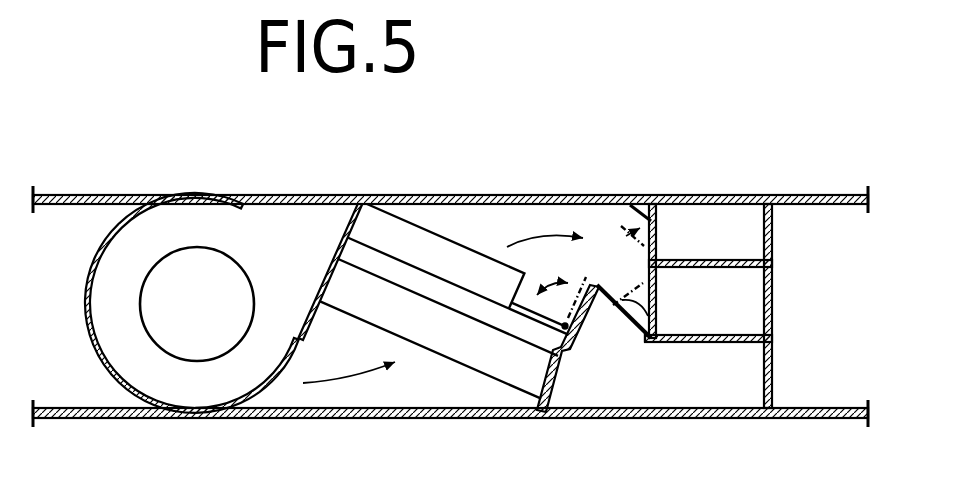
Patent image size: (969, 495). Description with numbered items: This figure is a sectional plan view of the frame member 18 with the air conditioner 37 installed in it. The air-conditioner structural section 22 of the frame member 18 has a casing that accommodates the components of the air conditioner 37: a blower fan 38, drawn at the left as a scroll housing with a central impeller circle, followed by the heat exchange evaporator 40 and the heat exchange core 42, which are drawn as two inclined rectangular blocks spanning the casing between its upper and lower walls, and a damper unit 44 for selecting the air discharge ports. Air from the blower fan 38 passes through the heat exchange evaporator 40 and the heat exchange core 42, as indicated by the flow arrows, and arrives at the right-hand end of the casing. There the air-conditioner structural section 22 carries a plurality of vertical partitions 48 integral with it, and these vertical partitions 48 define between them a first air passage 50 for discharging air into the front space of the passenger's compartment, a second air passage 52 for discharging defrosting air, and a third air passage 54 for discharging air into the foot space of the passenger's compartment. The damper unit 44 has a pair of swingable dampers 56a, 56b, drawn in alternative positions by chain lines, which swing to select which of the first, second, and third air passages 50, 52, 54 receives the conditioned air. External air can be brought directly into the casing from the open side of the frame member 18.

The frame member 18 is at (741, 117).
The air-conditioner structural section 22 is at (521, 196).
The air conditioner 37 is at (430, 387).
The blower fan 38 is at (158, 322).
The heat exchange evaporator 40 is at (507, 372).
The heat exchange core 42 is at (412, 240).
The damper unit 44 is at (668, 229).
The vertical partitions 48 is at (750, 333).
The first air passage 50 is at (722, 394).
The second air passage 52 is at (725, 315).
The third air passage 54 is at (730, 249).
The swingable damper 56a is at (640, 216).
The swingable damper 56b is at (623, 302).